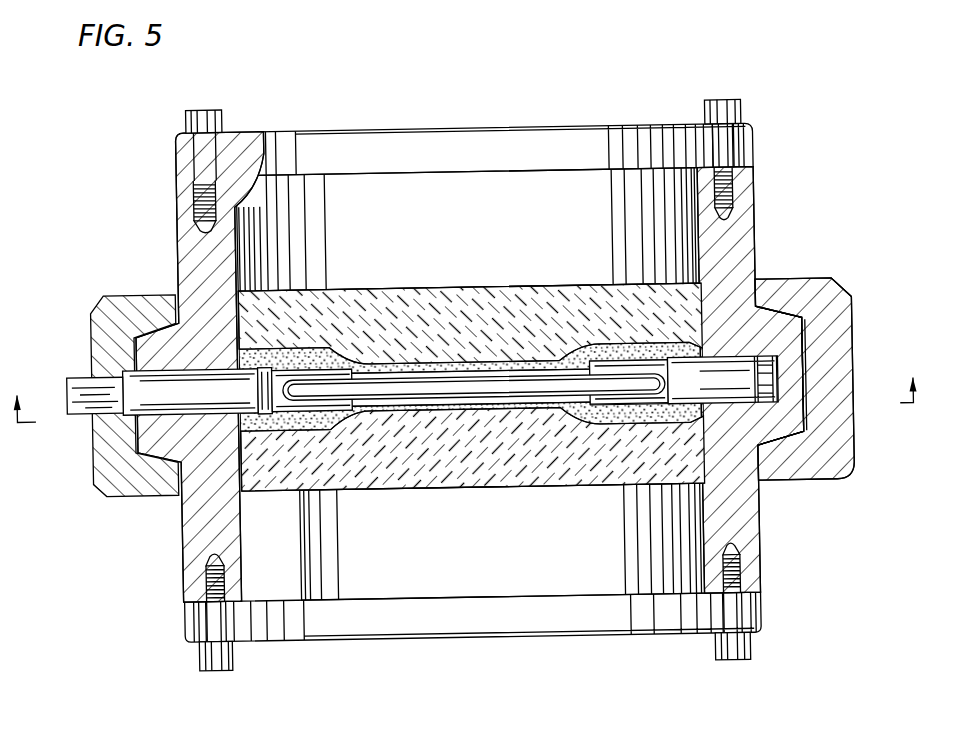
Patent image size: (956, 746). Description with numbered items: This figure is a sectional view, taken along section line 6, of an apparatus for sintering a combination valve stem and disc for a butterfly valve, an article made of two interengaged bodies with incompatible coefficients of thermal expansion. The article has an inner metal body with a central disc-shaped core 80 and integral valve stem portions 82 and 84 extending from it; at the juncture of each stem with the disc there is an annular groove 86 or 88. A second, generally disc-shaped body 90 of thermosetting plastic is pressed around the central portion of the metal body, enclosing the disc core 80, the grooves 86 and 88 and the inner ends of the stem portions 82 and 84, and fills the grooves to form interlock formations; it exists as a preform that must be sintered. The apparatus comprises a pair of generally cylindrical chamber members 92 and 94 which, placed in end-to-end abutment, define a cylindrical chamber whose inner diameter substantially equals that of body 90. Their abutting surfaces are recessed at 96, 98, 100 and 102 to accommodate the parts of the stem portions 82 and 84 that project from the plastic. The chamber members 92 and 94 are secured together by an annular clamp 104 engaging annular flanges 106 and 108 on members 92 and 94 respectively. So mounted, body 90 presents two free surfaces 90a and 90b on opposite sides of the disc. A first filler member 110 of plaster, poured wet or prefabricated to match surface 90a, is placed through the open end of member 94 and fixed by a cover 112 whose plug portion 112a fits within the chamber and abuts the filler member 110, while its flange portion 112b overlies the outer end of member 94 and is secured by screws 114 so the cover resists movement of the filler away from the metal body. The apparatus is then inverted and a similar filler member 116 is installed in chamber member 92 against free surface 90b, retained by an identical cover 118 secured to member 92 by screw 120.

The section line 6- 6 is at (464, 388).
The central disc-shaped core 80 is at (525, 388).
The valve stem portion 82 is at (784, 305).
The valve stem portion 84 is at (173, 382).
The annular groove 86 is at (672, 406).
The annular groove 88 is at (267, 410).
The disc-shaped body 90 is at (598, 334).
The free surface 90a is at (418, 359).
The free surface 90b is at (418, 411).
The chamber member 92 is at (740, 532).
The chamber member 94 is at (742, 242).
The recess 96 is at (771, 450).
The recess 98 is at (777, 380).
The recess 100 is at (158, 412).
The recess 102 is at (120, 372).
The annular clamp 104 is at (849, 483).
The annular flange 106 is at (778, 394).
The annular flange 108 is at (847, 301).
The filler member 110 is at (377, 303).
The cover 112 is at (391, 126).
The plug portion 112a is at (529, 201).
The flange portion 112b is at (176, 145).
The screws 114 is at (215, 106).
The filler member 116 is at (564, 471).
The cover 118 is at (368, 625).
The screw 120 is at (212, 658).